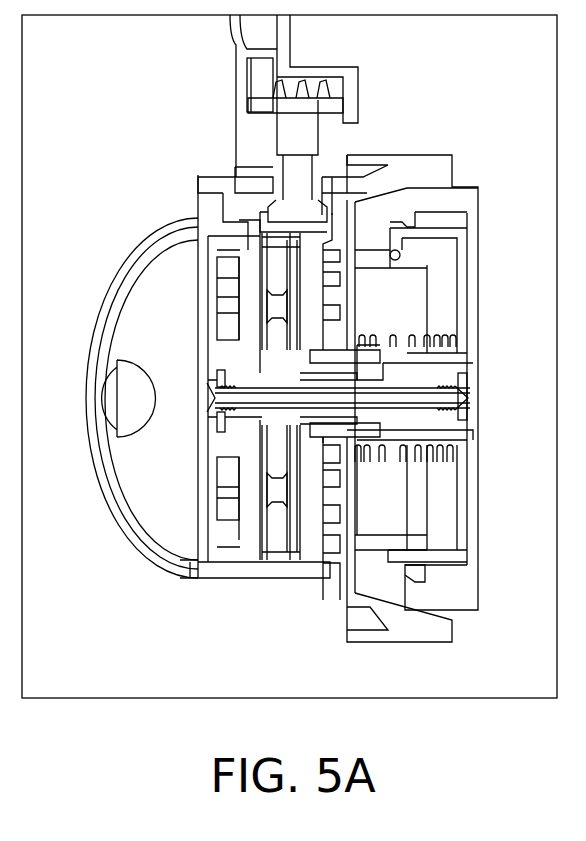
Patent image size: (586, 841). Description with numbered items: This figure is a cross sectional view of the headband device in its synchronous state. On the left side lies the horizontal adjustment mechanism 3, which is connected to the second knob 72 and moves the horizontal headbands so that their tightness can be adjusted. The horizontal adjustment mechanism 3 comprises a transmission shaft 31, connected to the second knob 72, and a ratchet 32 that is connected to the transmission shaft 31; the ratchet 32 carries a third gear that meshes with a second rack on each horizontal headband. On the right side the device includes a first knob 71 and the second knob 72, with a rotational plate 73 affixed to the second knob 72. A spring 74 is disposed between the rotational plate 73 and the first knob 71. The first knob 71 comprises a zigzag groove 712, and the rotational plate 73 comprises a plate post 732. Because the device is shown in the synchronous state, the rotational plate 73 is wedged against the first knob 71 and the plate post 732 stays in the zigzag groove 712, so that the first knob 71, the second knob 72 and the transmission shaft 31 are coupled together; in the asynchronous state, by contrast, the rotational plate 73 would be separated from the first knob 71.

The horizontal adjustment mechanism 3 is at (313, 633).
The transmission shaft 31 is at (297, 530).
The ratchet 32 is at (273, 525).
The first knob 71 is at (420, 628).
The second knob 72 is at (442, 597).
The rotational plate 73 is at (442, 503).
The zigzag groove 712 is at (400, 262).
The plate post 732 is at (398, 245).
The spring 74 is at (453, 457).